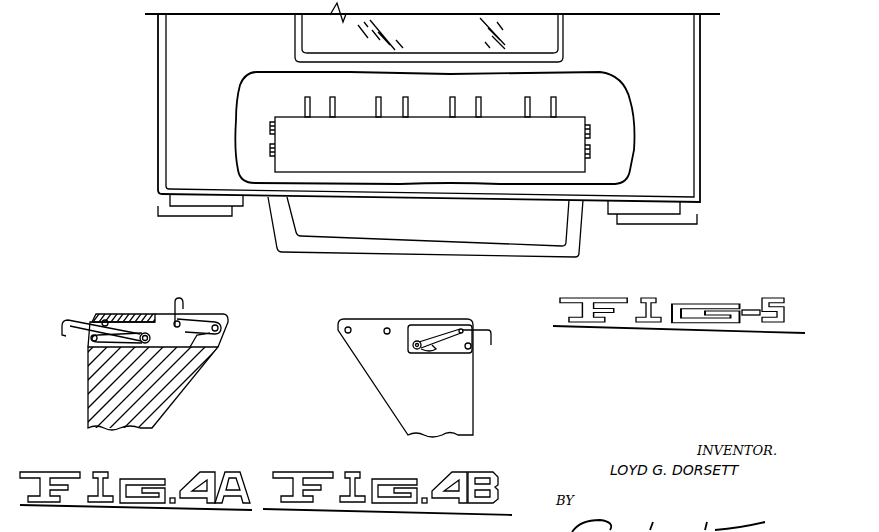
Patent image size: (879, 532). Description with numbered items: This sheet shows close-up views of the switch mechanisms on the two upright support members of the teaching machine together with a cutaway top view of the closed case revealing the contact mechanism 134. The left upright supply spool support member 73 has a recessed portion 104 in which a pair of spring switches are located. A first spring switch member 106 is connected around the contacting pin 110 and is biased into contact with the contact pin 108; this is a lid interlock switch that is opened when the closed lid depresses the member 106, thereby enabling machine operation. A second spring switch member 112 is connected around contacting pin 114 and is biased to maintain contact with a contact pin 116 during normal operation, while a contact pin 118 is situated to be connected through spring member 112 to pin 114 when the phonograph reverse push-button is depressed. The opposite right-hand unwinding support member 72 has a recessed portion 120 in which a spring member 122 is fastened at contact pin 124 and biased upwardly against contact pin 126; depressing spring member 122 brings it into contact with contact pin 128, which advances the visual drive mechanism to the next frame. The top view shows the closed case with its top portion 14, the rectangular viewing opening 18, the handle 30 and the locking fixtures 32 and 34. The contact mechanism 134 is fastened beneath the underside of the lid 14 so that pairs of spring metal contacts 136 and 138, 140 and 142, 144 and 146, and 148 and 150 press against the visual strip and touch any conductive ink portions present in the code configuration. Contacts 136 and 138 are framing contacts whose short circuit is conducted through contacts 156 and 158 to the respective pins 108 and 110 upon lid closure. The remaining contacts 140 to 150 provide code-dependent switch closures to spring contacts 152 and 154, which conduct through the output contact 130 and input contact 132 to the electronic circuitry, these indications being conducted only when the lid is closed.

In FIG. 5, the top portion 14 is at (680, 80).
In FIG. 5, the rectangular viewing opening 18 is at (546, 41).
In FIG. 5, the handle 30 is at (495, 258).
In FIG. 5, the locking fixture 32 is at (652, 222).
In FIG. 5, the locking fixture 34 is at (205, 214).
In FIG. 5, the contact mechanism 134 is at (400, 155).
In FIG. 5, the spring metal contact 136 is at (305, 101).
In FIG. 5, the spring metal contact 138 is at (328, 95).
In FIG. 5, the spring metal contact 140 is at (376, 101).
In FIG. 5, the spring metal contact 142 is at (404, 96).
In FIG. 5, the spring metal contact 144 is at (450, 101).
In FIG. 5, the spring metal contact 146 is at (477, 96).
In FIG. 5, the spring metal contact 148 is at (525, 104).
In FIG. 5, the spring metal contact 150 is at (552, 97).
In FIG. 5, the spring contact 152 is at (590, 131).
In FIG. 5, the spring contact 154 is at (590, 152).
In FIG. 5, the contact 156 is at (270, 128).
In FIG. 5, the contact 158 is at (268, 146).
In FIG. 4B, the right-hand unwinding support member 72 is at (460, 416).
In FIG. 4A, the left upright supply spool support member 73 is at (100, 400).
In FIG. 4A, the recessed portion 104 is at (212, 341).
In FIG. 4A, the first spring switch member 106 is at (178, 298).
In FIG. 4A, the contact pin 108 is at (181, 320).
In FIG. 4A, the contacting pin 110 is at (222, 323).
In FIG. 4A, the second spring switch member 112 is at (73, 318).
In FIG. 4A, the contacting pin 114 is at (147, 332).
In FIG. 4A, the contact pin 116 is at (107, 318).
In FIG. 4A, the contact pin 118 is at (90, 345).
In FIG. 4B, the recessed portion 120 is at (478, 360).
In FIG. 4B, the spring member 122 is at (492, 338).
In FIG. 4B, the contact pin 124 is at (412, 345).
In FIG. 4B, the contact pin 126 is at (461, 326).
In FIG. 4B, the contact pin 128 is at (473, 348).
In FIG. 4B, the output contact 130 is at (345, 328).
In FIG. 4B, the input contact 132 is at (387, 326).